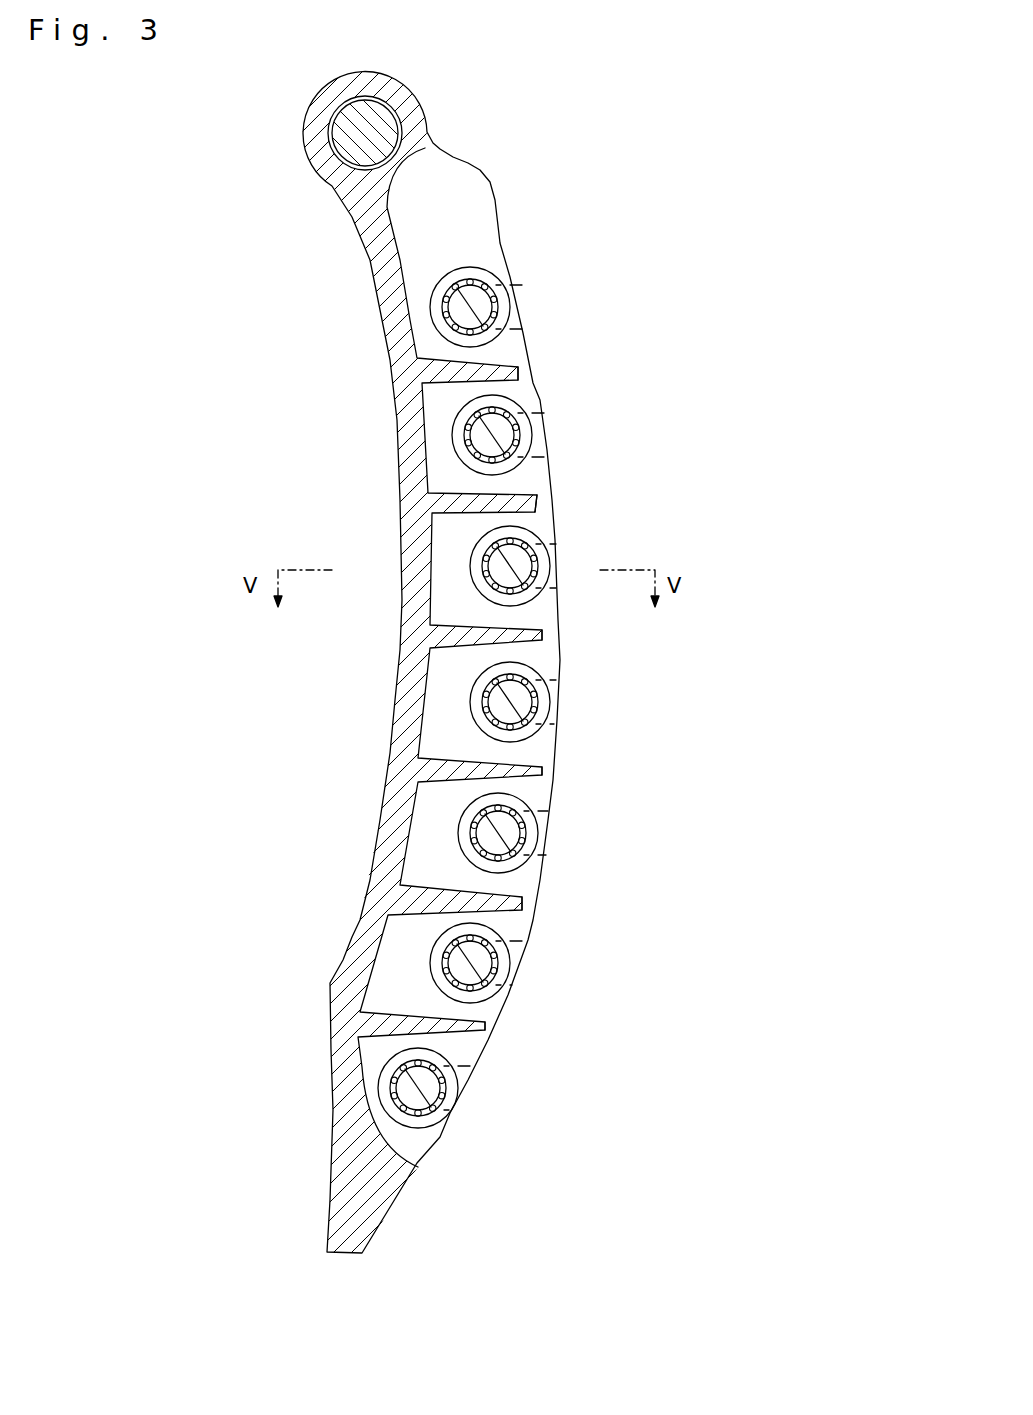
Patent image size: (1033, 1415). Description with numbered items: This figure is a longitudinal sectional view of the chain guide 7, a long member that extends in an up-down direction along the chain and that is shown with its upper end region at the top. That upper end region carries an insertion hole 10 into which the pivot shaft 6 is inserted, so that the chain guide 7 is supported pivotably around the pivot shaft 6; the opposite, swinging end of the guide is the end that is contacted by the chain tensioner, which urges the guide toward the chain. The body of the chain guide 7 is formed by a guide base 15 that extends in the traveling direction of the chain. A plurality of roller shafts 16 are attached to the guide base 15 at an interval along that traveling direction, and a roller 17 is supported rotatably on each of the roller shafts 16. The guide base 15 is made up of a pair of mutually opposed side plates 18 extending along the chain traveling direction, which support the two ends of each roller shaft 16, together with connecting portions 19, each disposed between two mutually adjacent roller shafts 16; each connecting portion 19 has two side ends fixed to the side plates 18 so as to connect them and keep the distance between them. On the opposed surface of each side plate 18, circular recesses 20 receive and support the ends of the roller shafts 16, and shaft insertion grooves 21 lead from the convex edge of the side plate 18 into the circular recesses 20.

The pivot shaft 6 is at (327, 122).
The chain guide 7 is at (516, 660).
The insertion hole 10 is at (332, 152).
The guide base 15 is at (403, 372).
The roller shaft 16 is at (465, 308).
The roller 17 is at (487, 270).
The side plate 18 is at (517, 345).
The connecting portion 19 is at (505, 373).
The circular recess 20 is at (498, 593).
The shaft insertion groove 21 is at (557, 582).